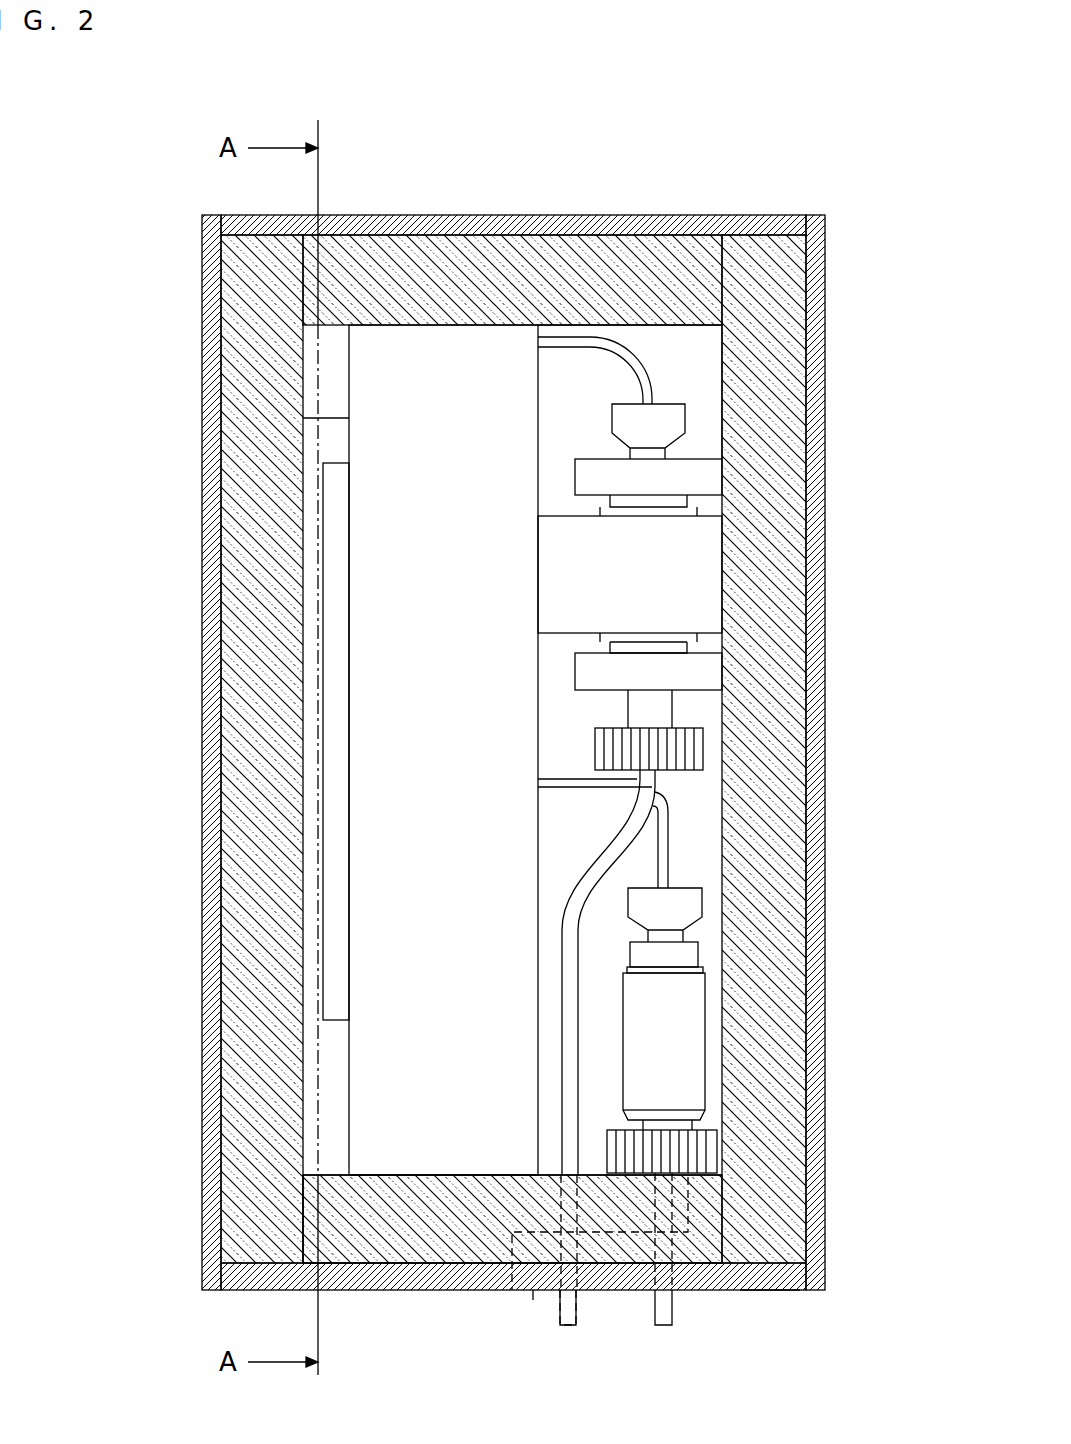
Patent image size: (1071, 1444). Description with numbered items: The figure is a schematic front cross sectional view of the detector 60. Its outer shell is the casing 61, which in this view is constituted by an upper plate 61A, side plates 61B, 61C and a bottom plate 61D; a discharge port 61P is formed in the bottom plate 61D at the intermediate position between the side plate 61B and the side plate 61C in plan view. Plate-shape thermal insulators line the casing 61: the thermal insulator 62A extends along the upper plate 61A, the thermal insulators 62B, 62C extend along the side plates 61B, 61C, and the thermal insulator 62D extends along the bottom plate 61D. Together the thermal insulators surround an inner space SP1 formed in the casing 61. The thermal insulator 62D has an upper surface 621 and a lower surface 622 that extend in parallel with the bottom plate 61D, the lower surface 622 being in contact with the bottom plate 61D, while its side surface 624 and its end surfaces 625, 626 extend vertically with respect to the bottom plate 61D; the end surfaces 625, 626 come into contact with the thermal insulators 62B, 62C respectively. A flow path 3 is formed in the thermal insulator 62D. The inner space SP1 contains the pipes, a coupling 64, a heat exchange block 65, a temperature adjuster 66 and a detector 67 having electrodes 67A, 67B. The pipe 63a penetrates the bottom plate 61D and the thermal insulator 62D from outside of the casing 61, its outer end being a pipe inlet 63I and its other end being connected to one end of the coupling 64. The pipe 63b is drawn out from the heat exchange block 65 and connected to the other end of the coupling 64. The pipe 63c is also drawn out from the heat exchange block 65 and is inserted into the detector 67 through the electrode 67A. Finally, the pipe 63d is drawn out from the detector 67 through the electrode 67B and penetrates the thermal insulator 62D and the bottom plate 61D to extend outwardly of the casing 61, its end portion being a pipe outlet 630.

The detector 60 is at (912, 147).
The casing 61 is at (826, 214).
The upper plate 61A is at (495, 228).
The side plate 61B is at (815, 398).
The side plate 61C is at (210, 623).
The bottom plate 61D is at (375, 1290).
The discharge port 61P is at (533, 1293).
The thermal insulator 62A is at (468, 265).
The thermal insulator 62B is at (743, 420).
The thermal insulator 62C is at (278, 632).
The thermal insulator 62D is at (350, 1250).
The upper surface 621 is at (425, 1175).
The lower surface 622 is at (465, 1263).
The side surface 624 is at (478, 1210).
The end surface 625 is at (725, 1247).
The end surface 626 is at (303, 1218).
The pipe 63a is at (672, 1210).
The pipe 63b is at (672, 868).
The pipe 63c is at (597, 337).
The pipe 63d is at (655, 790).
The pipe outlet 630 is at (572, 1325).
The pipe inlet 63I is at (668, 1325).
The coupling 64 is at (707, 1008).
The heat exchange block 65 is at (318, 418).
The temperature adjuster 66 is at (330, 507).
The detector 67 is at (702, 580).
The electrode 67A is at (712, 478).
The electrode 67B is at (712, 672).
The inner space SP1 is at (683, 365).
The flow path 3 is at (753, 1293).